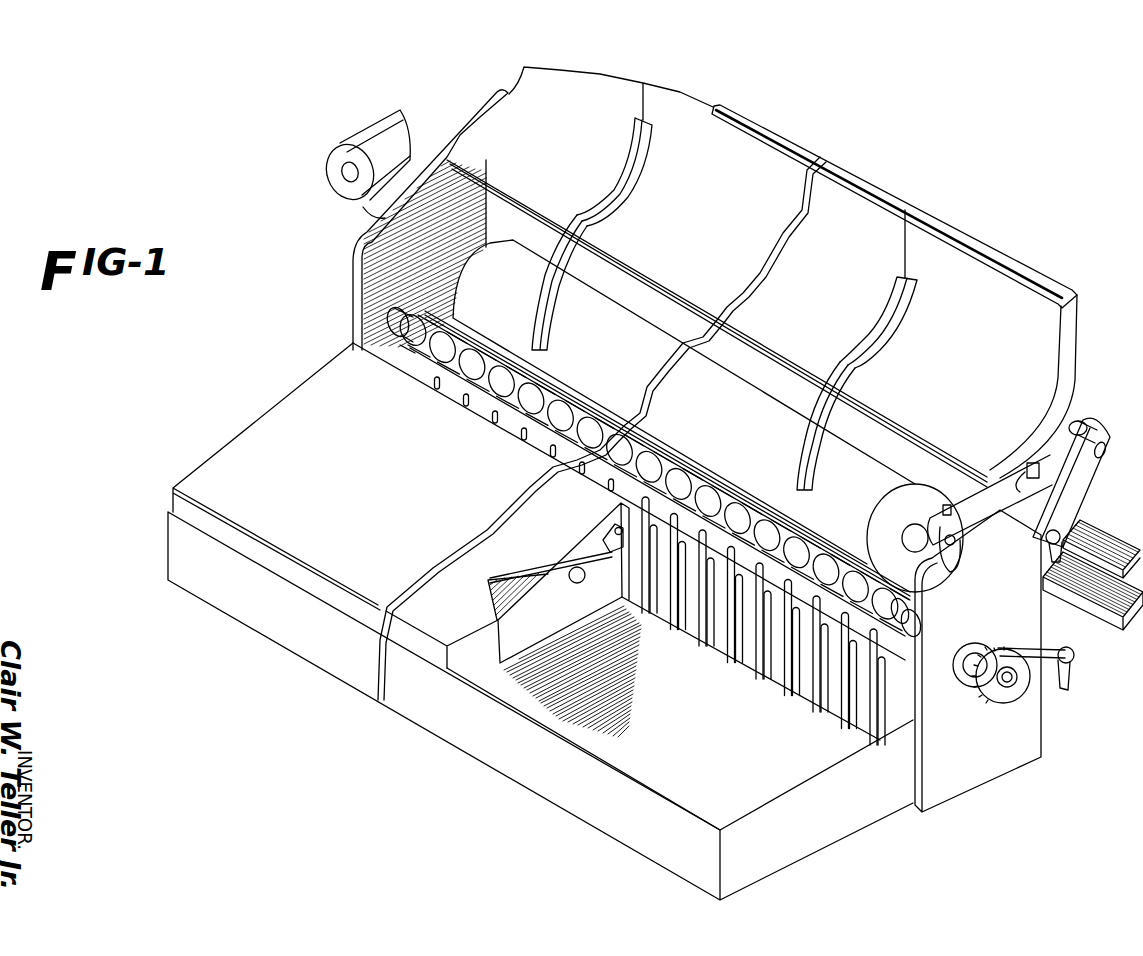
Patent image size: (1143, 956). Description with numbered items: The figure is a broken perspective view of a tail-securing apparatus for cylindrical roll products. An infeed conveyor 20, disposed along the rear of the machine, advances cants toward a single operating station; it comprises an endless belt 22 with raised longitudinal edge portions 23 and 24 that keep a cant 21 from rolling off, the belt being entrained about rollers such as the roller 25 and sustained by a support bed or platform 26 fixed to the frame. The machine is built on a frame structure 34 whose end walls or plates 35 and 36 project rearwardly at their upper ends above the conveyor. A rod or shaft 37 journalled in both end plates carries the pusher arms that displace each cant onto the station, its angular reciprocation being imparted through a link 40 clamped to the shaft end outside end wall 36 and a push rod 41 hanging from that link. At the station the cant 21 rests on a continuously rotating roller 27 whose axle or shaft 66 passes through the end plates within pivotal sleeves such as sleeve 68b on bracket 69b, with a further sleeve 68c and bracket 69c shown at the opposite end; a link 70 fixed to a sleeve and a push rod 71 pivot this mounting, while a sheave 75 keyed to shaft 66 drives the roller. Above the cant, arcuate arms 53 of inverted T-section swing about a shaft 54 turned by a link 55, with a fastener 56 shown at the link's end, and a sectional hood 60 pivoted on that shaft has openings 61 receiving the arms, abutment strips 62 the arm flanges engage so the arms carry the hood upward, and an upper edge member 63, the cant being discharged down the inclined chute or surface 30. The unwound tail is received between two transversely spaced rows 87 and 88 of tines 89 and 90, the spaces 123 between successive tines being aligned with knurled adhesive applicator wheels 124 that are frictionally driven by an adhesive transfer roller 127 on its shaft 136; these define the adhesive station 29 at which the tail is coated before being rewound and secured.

The infeed conveyor 20 is at (315, 155).
The cant 21 is at (732, 437).
The endless belt 22 is at (375, 124).
The raised longitudinal edge portion 23 is at (420, 124).
The raised longitudinal edge portion 24 is at (363, 211).
The roller 25 is at (336, 176).
The support bed or platform 26 is at (1100, 558).
The roller or shaft 27 is at (556, 396).
The adhesive station 29 is at (558, 626).
The inclined chute or surface 30 is at (268, 398).
The frame structure 34 is at (795, 838).
The end wall or plate 35 is at (357, 293).
The end wall or plate 36 is at (966, 777).
The rod or shaft 37 is at (1088, 428).
The link 40 is at (1090, 482).
The push rod 41 is at (1043, 562).
The arcuate arm 53 is at (548, 310).
The shaft 54 is at (1025, 475).
The link 55 is at (975, 526).
The bolt 56 is at (955, 566).
The hood 60 is at (870, 205).
The opening or cut-out portion 61 is at (888, 340).
The abutment element or strip 62 is at (610, 196).
The top rail 63 is at (982, 246).
The axle or shaft 66 is at (1012, 682).
The sleeve 68b is at (393, 320).
The right roller end cap 68c is at (915, 632).
The bracket 69b is at (410, 352).
The right bearing 69c is at (905, 609).
The link 70 is at (1048, 653).
The push rod 71 is at (1062, 684).
The sheave or sprocket 75 is at (1002, 700).
The row of tines 87 is at (856, 745).
The row of tines 88 is at (874, 720).
The tine or post 89 is at (814, 705).
The tine or post 90 is at (835, 728).
The space 123 is at (778, 683).
The adhesive applicator wheel or roller 124 is at (606, 534).
The adhesive transfer roller 127 is at (576, 556).
The shaft 136 is at (585, 582).